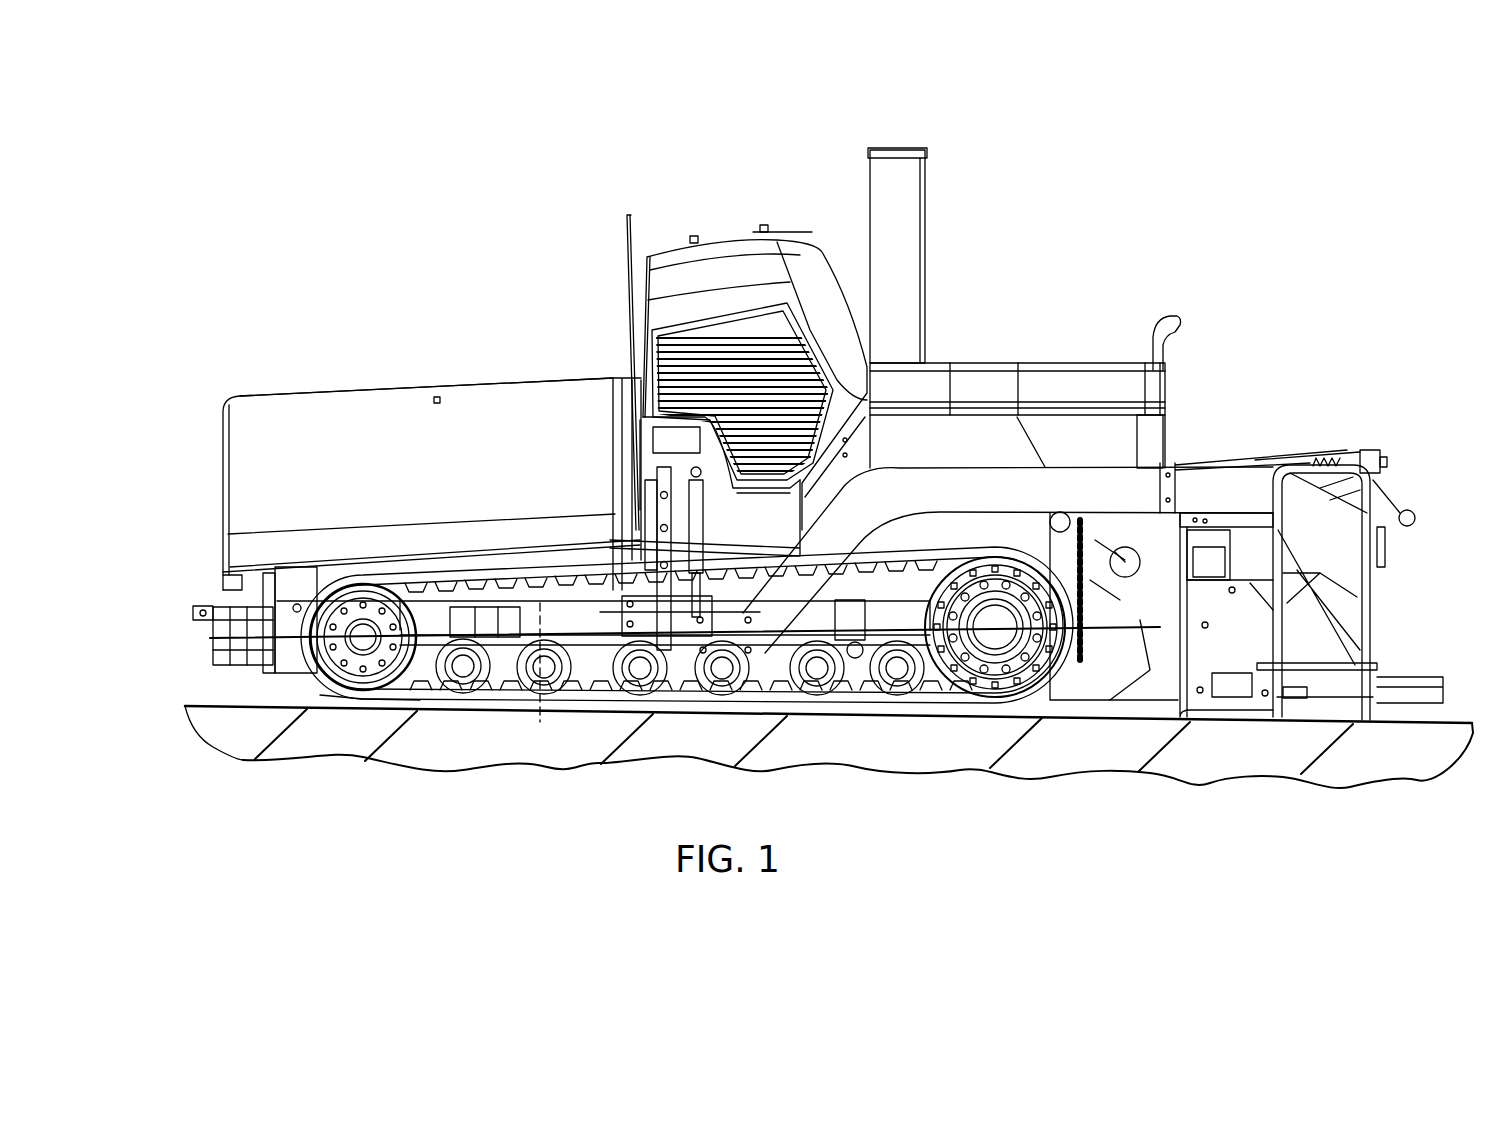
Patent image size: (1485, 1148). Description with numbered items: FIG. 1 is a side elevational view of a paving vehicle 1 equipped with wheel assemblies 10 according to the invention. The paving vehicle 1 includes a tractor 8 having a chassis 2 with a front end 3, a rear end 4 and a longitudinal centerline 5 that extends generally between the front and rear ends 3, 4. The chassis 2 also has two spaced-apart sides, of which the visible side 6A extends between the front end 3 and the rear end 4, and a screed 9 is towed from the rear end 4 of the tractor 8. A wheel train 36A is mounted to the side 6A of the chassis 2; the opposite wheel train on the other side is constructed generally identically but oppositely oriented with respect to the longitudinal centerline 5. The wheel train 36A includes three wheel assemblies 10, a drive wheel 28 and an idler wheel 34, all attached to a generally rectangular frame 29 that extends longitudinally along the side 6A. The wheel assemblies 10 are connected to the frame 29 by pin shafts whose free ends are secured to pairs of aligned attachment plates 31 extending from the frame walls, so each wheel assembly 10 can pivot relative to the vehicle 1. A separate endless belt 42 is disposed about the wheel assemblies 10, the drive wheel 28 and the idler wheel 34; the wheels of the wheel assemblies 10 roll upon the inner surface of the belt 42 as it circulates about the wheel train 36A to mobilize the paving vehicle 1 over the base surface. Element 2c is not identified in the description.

The paving vehicle 1 is at (1068, 262).
The chassis 2 is at (968, 446).
The hopper support plate 2c is at (290, 590).
The front end 3 is at (240, 487).
The rear end 4 is at (1030, 455).
The longitudinal centerline 5 is at (1140, 665).
The side 6A is at (1080, 676).
The tractor 8 is at (500, 377).
The screed 9 is at (1323, 440).
The wheel assembly 10 is at (463, 722).
The drive wheel 28 is at (1005, 690).
The frame 29 is at (583, 603).
The attachment plates 31 is at (498, 645).
The idler wheel 34 is at (340, 592).
The wheel train 36A is at (328, 710).
The endless belt 42 is at (587, 712).